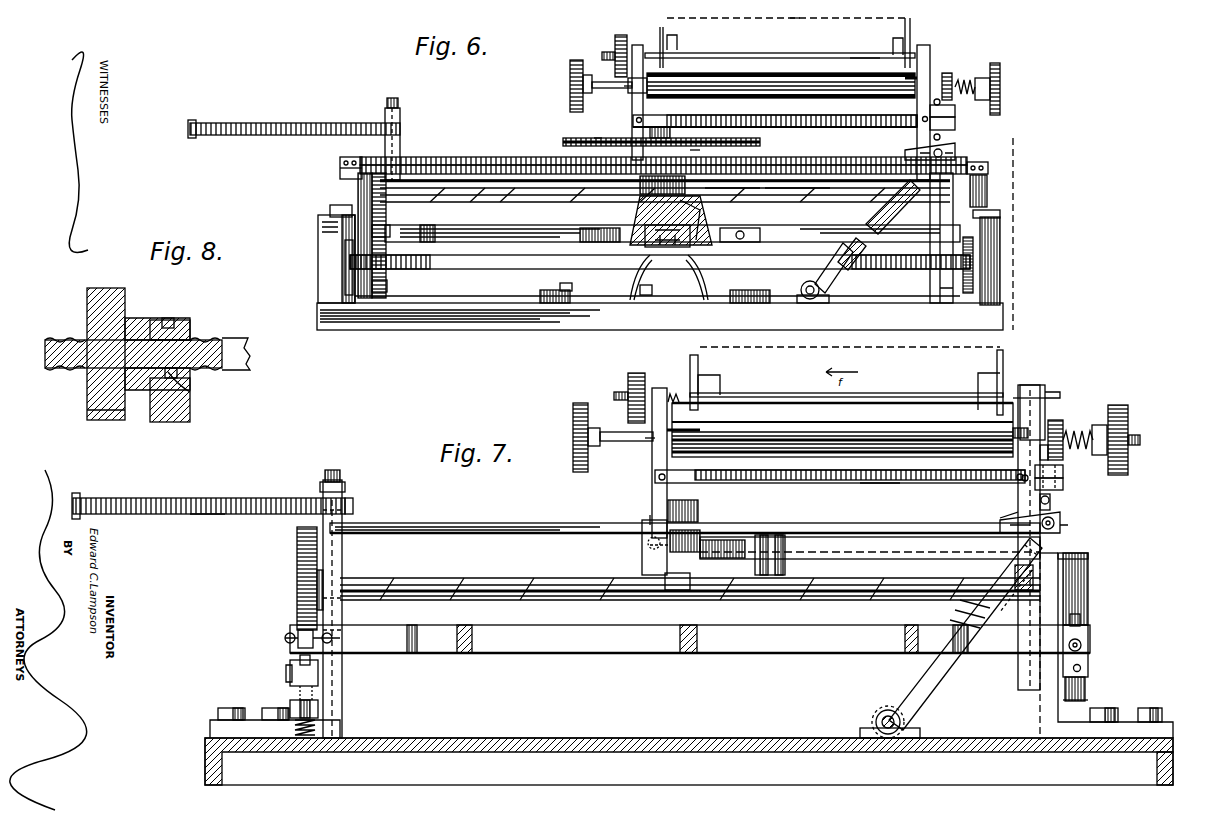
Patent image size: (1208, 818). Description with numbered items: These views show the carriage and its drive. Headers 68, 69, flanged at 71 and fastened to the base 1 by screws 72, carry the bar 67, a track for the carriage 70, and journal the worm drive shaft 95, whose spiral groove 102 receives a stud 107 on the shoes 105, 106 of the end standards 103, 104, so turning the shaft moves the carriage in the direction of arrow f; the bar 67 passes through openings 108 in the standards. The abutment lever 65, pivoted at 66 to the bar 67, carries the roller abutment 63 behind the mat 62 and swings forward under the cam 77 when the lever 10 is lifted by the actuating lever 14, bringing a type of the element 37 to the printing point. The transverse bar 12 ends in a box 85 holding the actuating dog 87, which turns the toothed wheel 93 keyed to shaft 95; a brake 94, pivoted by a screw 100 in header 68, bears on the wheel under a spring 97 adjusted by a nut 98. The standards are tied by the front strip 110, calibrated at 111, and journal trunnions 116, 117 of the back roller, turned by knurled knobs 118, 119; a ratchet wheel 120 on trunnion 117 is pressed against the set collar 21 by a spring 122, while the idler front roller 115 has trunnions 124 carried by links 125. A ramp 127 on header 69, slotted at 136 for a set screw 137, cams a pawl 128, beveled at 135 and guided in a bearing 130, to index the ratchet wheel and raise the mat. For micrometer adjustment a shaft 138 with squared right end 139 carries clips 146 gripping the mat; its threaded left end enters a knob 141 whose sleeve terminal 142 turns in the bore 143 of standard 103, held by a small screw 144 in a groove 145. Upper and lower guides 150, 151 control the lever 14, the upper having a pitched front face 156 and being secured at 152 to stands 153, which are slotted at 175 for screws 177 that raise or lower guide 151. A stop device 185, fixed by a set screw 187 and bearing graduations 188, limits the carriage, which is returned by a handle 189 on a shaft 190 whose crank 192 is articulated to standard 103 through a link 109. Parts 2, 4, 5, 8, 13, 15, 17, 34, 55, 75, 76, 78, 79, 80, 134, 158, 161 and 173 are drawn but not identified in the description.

In FIG. 7, the base 1 is at (585, 738).
In FIG. 6, the standard 2 is at (640, 283).
In FIG. 6, the base plate 4 is at (598, 304).
In FIG. 6, the bearing block 5 is at (680, 255).
In FIG. 6, the bearing 8 is at (653, 255).
In FIG. 7, the lever 10 is at (703, 654).
In FIG. 6, the transverse bar 12 is at (435, 232).
In FIG. 7, the transverse bar 12 is at (375, 630).
In FIG. 6, the cross bar 13 is at (946, 44).
In FIG. 7, the cross bar 13 is at (466, 653).
In FIG. 6, the actuating lever 14 is at (698, 213).
In FIG. 6, the guide block 15 is at (640, 186).
In FIG. 6, the bearing 17 is at (748, 232).
In FIG. 6, the set collar 21 is at (738, 232).
In FIG. 6, the type carrier 34 is at (699, 148).
In FIG. 6, the element 37 is at (601, 133).
In FIG. 6, the type bar 55 is at (563, 142).
In FIG. 6, the mat 62 is at (910, 32).
In FIG. 7, the mat 62 is at (1002, 355).
In FIG. 7, the roller abutment 63 is at (700, 512).
In FIG. 6, the abutment lever 65 is at (783, 182).
In FIG. 7, the abutment lever 65 is at (858, 557).
In FIG. 6, the pivot 66 is at (725, 187).
In FIG. 7, the pivot 66 is at (785, 545).
In FIG. 7, the bar 67 is at (428, 522).
In FIG. 6, the left header 68 is at (400, 150).
In FIG. 7, the left header 68 is at (342, 573).
In FIG. 6, the right header 69 is at (932, 285).
In FIG. 7, the right header 69 is at (1045, 673).
In FIG. 6, the carriage 70 is at (819, 65).
In FIG. 7, the carriage 70 is at (1066, 391).
In FIG. 7, the flange 71 is at (215, 724).
In FIG. 7, the screws 72 is at (236, 708).
In FIG. 7, the bearing sleeve 75 is at (1088, 601).
In FIG. 7, the collar 76 is at (1085, 617).
In FIG. 7, the cam 77 is at (1080, 695).
In FIG. 7, the bracket 78 is at (1088, 656).
In FIG. 7, the screw 79 is at (1082, 668).
In FIG. 7, the pivot screw 80 is at (1082, 645).
In FIG. 6, the box 85 is at (330, 228).
In FIG. 6, the actuating dog 87 is at (390, 227).
In FIG. 7, the actuating dog 87 is at (297, 632).
In FIG. 6, the toothed wheel 93 is at (372, 151).
In FIG. 7, the toothed wheel 93 is at (300, 548).
In FIG. 7, the brake 94 is at (318, 671).
In FIG. 6, the worm drive shaft 95 is at (538, 195).
In FIG. 7, the worm drive shaft 95 is at (518, 578).
In FIG. 7, the spring 97 is at (318, 726).
In FIG. 6, the nut 98 is at (387, 286).
In FIG. 7, the nut 98 is at (318, 707).
In FIG. 7, the screw 100 is at (290, 675).
In FIG. 6, the spiral groove 102 is at (492, 195).
In FIG. 7, the spiral groove 102 is at (470, 570).
In FIG. 6, the end standard 103 is at (641, 131).
In FIG. 8, the end standard 103 is at (190, 410).
In FIG. 7, the end standard 103 is at (655, 460).
In FIG. 6, the end standard 104 is at (917, 140).
In FIG. 7, the end standard 104 is at (1018, 495).
In FIG. 7, the shoe 105 is at (645, 561).
In FIG. 7, the shoe 106 is at (1000, 525).
In FIG. 7, the stud 107 is at (687, 590).
In FIG. 7, the openings 108 is at (650, 522).
In FIG. 7, the link 109 is at (705, 540).
In FIG. 6, the indicator strip 110 is at (828, 127).
In FIG. 7, the indicator strip 110 is at (841, 472).
In FIG. 7, the calibrations 111 is at (876, 485).
In FIG. 6, the front roller 115 is at (786, 72).
In FIG. 7, the front roller 115 is at (868, 430).
In FIG. 6, the trunnion 116 is at (612, 89).
In FIG. 7, the trunnion 116 is at (616, 430).
In FIG. 7, the trunnion 117 is at (1135, 437).
In FIG. 6, the knurled knob 118 is at (571, 72).
In FIG. 7, the knurled knob 118 is at (572, 418).
In FIG. 6, the knurled knob 119 is at (1000, 86).
In FIG. 7, the knurled knob 119 is at (1124, 418).
In FIG. 6, the ratchet wheel 120 is at (955, 75).
In FIG. 7, the ratchet wheel 120 is at (1065, 430).
In FIG. 6, the spring 122 is at (966, 85).
In FIG. 7, the spring 122 is at (1068, 447).
In FIG. 6, the trunnions 124 is at (636, 96).
In FIG. 7, the trunnions 124 is at (671, 430).
In FIG. 6, the links 125 is at (626, 90).
In FIG. 7, the links 125 is at (644, 440).
In FIG. 6, the ramp 127 is at (960, 149).
In FIG. 7, the ramp 127 is at (1062, 522).
In FIG. 6, the pawl 128 is at (955, 112).
In FIG. 7, the pawl 128 is at (1063, 472).
In FIG. 6, the bearing 130 is at (958, 126).
In FIG. 7, the bearing 130 is at (1063, 486).
In FIG. 7, the pin 134 is at (1040, 455).
In FIG. 7, the bevel 135 is at (1052, 500).
In FIG. 7, the slot 136 is at (1062, 538).
In FIG. 6, the set screw 137 is at (962, 158).
In FIG. 7, the set screw 137 is at (1060, 540).
In FIG. 6, the shaft 138 is at (860, 56).
In FIG. 8, the shaft 138 is at (240, 344).
In FIG. 6, the right end 139 is at (780, 221).
In FIG. 7, the right end 139 is at (887, 394).
In FIG. 6, the knob 141 is at (616, 36).
In FIG. 8, the knob 141 is at (125, 300).
In FIG. 7, the knob 141 is at (628, 410).
In FIG. 8, the sleeve terminal 142 is at (198, 325).
In FIG. 8, the bore 143 is at (190, 382).
In FIG. 8, the small screw 144 is at (172, 318).
In FIG. 7, the small screw 144 is at (1022, 390).
In FIG. 8, the groove 145 is at (190, 395).
In FIG. 6, the clips 146 is at (905, 31).
In FIG. 7, the clips 146 is at (1010, 385).
In FIG. 6, the upper guide 150 is at (340, 163).
In FIG. 6, the lower guide 151 is at (450, 257).
In FIG. 6, the securing point 152 is at (988, 170).
In FIG. 6, the stands 153 is at (358, 195).
In FIG. 6, the front face 156 is at (455, 157).
In FIG. 6, the index scale 158 is at (500, 157).
In FIG. 6, the pointer 161 is at (672, 148).
In FIG. 6, the support 173 is at (636, 215).
In FIG. 6, the slot 175 is at (343, 277).
In FIG. 6, the screw 177 is at (330, 211).
In FIG. 6, the stop device 185 is at (300, 123).
In FIG. 7, the stop device 185 is at (233, 497).
In FIG. 6, the set screw 187 is at (395, 98).
In FIG. 7, the set screw 187 is at (338, 472).
In FIG. 7, the graduations 188 is at (212, 514).
In FIG. 6, the handle 189 is at (838, 274).
In FIG. 6, the shaft 190 is at (804, 289).
In FIG. 7, the shaft 190 is at (886, 714).
In FIG. 6, the crank 192 is at (868, 222).
In FIG. 7, the crank 192 is at (900, 692).